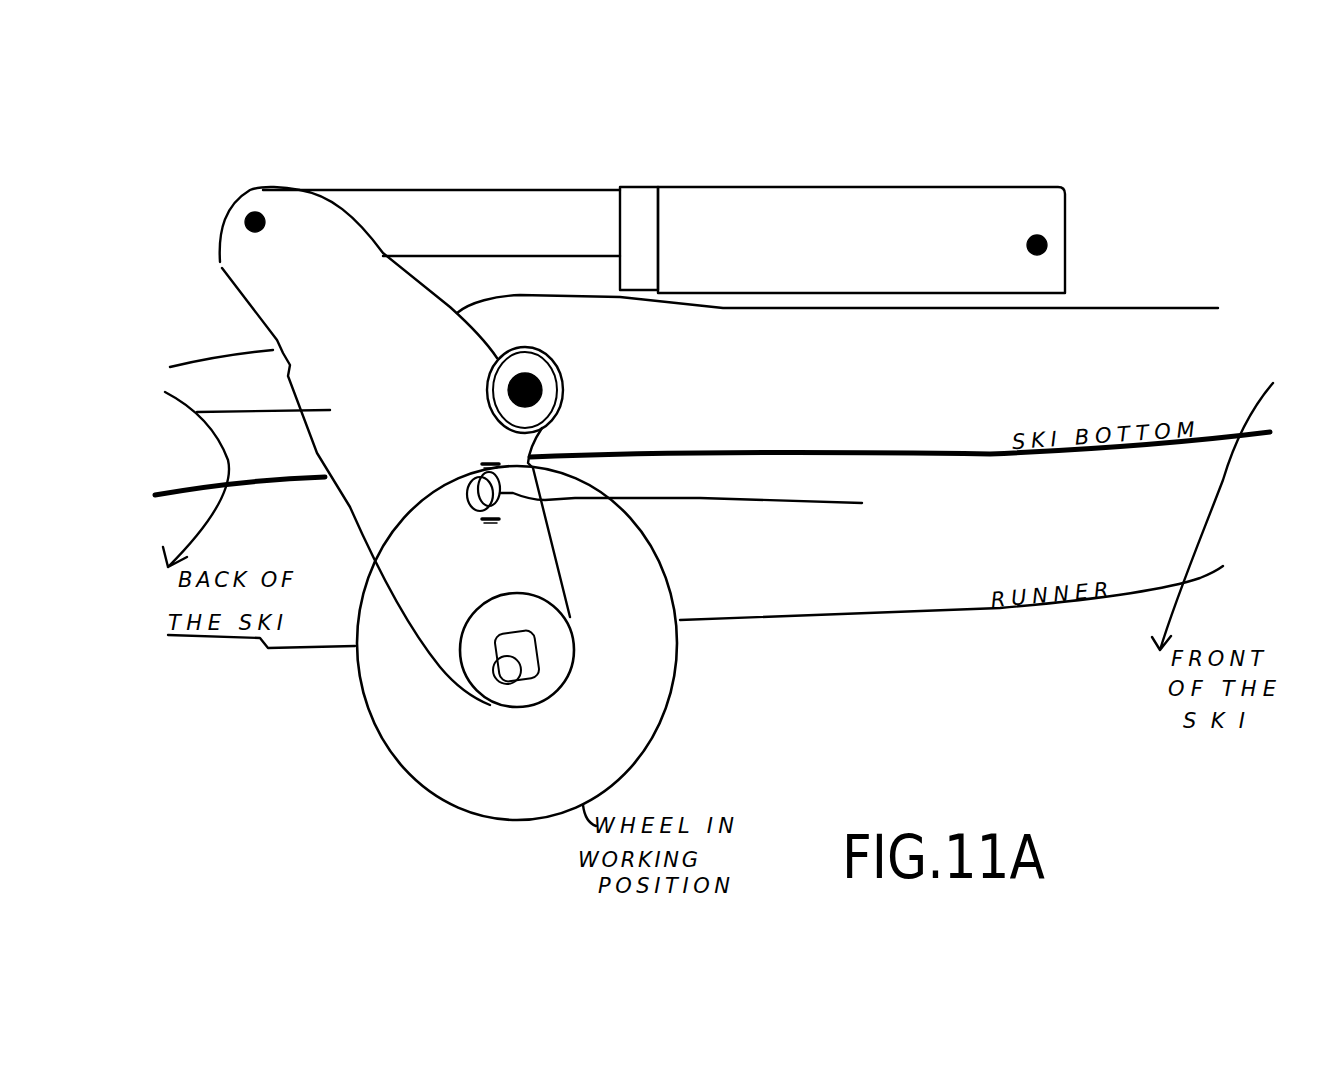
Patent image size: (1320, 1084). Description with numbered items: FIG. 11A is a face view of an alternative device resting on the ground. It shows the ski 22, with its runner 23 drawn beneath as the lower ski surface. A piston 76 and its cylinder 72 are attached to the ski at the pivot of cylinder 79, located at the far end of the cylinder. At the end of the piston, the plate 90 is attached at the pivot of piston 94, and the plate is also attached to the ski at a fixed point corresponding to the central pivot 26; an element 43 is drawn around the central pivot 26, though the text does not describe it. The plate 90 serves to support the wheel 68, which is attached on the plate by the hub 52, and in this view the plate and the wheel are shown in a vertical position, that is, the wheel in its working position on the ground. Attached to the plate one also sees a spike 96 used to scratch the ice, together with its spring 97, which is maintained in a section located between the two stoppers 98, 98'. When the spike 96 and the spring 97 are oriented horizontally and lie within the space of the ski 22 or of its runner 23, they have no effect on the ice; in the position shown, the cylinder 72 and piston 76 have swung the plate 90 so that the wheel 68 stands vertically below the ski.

The ski 22 is at (990, 393).
The runner 23 is at (940, 596).
The central pivot 26 is at (535, 373).
The pivot bushing 43 is at (487, 370).
The hub 52 is at (545, 668).
The wheel 68 is at (548, 805).
The cylinder 72 is at (905, 210).
The piston 76 is at (452, 207).
The pivot of cylinder 79 is at (1040, 232).
The plate 90 is at (197, 412).
The pivot of piston 94 is at (250, 210).
The spike 96 is at (732, 503).
The spring 97 is at (466, 493).
The stopper 98 is at (450, 552).
The stopper 98' is at (450, 420).